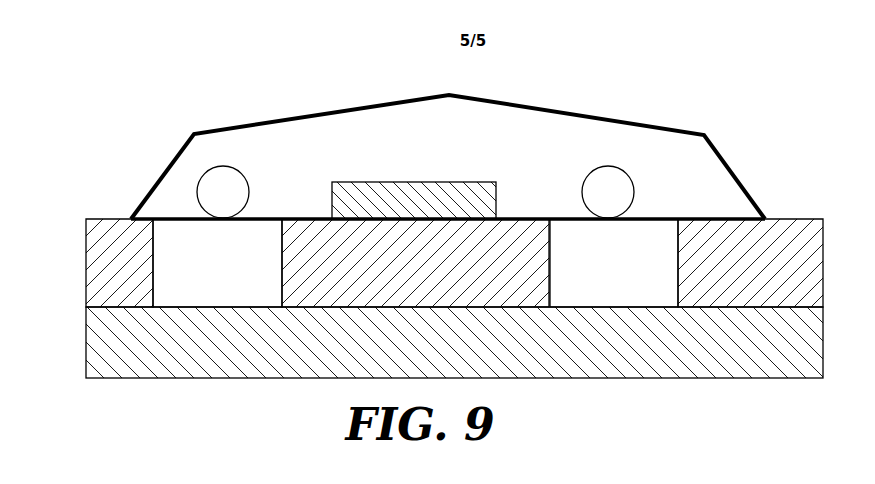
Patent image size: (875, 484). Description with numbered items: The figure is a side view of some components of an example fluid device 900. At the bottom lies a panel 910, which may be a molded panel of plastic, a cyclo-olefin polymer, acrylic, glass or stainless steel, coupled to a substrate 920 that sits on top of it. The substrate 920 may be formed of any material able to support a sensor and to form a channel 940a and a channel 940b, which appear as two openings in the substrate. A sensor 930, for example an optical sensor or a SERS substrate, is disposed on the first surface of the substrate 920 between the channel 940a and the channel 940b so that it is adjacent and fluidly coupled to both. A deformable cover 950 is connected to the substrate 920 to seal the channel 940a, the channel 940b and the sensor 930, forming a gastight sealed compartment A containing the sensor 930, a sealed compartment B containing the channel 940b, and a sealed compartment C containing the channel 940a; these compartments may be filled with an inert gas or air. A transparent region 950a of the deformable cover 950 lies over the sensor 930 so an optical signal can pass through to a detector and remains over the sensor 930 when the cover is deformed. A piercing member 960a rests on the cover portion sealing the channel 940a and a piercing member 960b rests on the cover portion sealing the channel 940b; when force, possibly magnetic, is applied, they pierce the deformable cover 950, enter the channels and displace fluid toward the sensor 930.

The fluid device 900 is at (206, 82).
The panel 910 is at (738, 381).
The substrate 920 is at (454, 263).
The sensor 930 is at (414, 200).
The channel 940a is at (217, 263).
The channel 940b is at (614, 263).
The deformable cover 950 is at (657, 125).
The transparent region 950a is at (304, 110).
The piercing member 960a is at (225, 166).
The piercing member 960b is at (609, 166).
The sealed compartment A is at (520, 116).
The sealed compartment B is at (627, 238).
The sealed compartment C is at (214, 237).